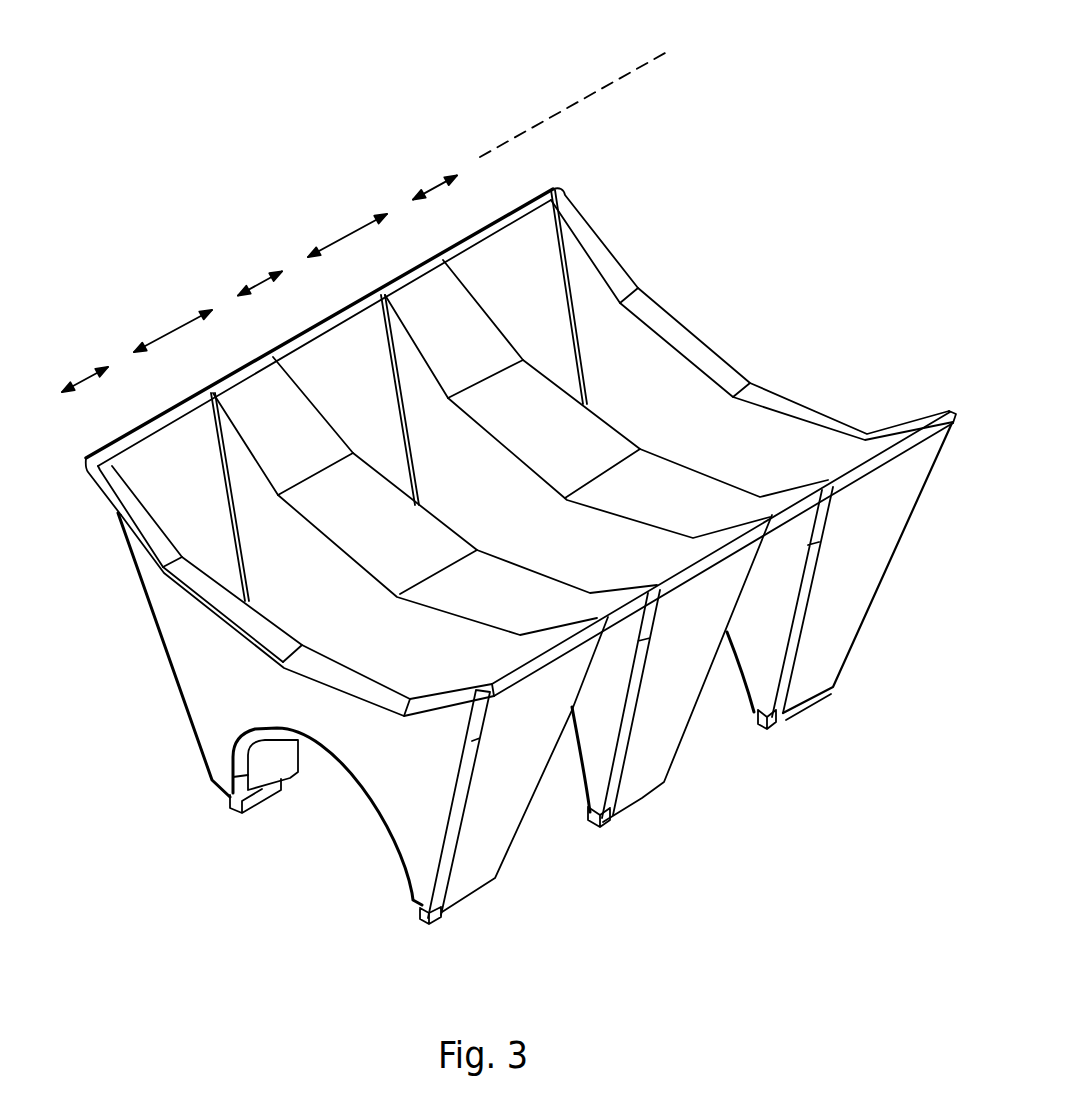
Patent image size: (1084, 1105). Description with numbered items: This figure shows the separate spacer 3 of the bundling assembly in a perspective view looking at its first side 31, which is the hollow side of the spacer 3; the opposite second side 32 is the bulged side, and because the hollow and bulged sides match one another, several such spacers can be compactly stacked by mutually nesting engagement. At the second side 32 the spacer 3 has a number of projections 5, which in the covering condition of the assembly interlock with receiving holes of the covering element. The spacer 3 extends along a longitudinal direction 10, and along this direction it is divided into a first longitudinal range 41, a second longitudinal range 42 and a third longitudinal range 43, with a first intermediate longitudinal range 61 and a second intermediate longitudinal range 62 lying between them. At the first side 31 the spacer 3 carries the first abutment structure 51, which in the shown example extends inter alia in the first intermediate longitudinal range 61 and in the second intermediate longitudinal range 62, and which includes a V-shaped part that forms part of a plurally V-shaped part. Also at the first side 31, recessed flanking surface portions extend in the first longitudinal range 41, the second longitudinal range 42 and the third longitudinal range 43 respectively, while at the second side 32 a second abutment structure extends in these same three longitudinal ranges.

The spacer 3 is at (521, 494).
The projection 5 is at (260, 793).
The longitudinal direction 10 is at (633, 70).
The first side 31 is at (755, 258).
The second side 32 is at (307, 880).
The first longitudinal range 41 is at (80, 378).
The second longitudinal range 42 is at (262, 283).
The third longitudinal range 43 is at (440, 183).
The first abutment structure 51 is at (603, 257).
The first intermediate longitudinal range 61 is at (182, 332).
The second intermediate longitudinal range 62 is at (350, 232).